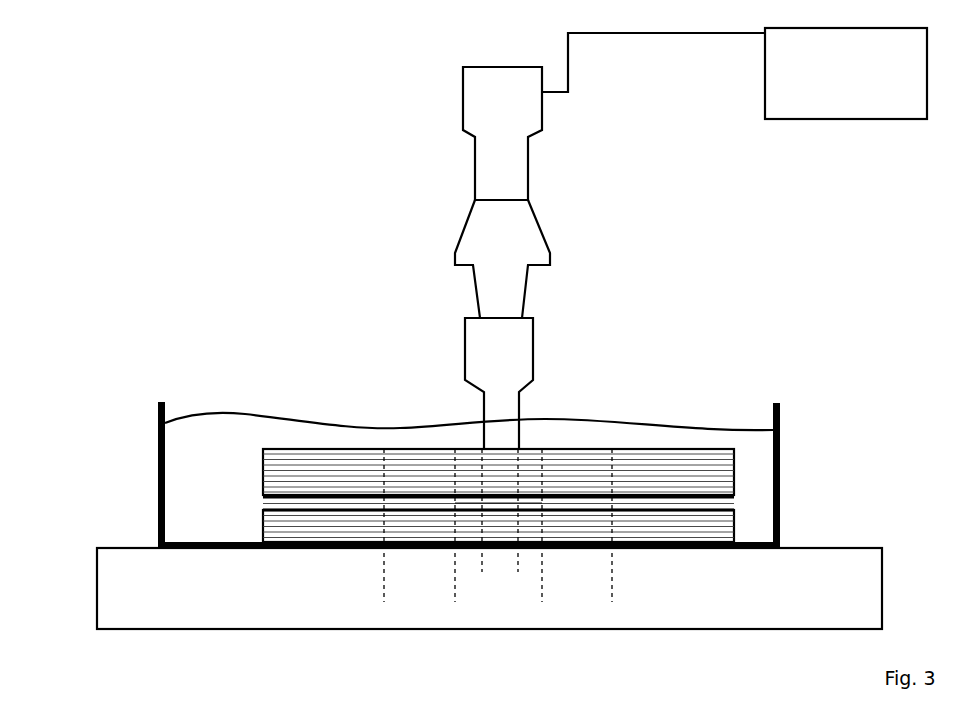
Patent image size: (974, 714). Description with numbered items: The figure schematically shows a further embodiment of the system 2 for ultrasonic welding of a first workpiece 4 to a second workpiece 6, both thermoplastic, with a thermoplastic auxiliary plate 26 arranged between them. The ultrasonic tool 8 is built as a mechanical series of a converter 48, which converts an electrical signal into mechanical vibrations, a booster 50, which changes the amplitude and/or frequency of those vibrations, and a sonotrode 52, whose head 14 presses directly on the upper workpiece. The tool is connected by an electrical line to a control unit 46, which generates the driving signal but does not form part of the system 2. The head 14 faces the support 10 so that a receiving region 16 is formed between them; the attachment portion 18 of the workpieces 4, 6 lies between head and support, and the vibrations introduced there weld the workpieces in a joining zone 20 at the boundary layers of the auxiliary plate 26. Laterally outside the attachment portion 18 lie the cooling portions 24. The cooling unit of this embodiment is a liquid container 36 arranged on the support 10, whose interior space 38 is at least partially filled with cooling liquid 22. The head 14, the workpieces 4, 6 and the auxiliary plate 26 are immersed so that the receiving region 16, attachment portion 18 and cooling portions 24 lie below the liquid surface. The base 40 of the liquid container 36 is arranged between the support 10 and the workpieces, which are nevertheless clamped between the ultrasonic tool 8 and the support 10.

The system 2 is at (248, 203).
The first workpiece 4 is at (260, 468).
The second workpiece 6 is at (260, 529).
The ultrasonic tool 8 is at (572, 217).
The support 10 is at (837, 598).
The head 14 is at (523, 445).
The receiving region 16 is at (482, 563).
The attachment portion 18 is at (455, 600).
The joining zone 20 is at (505, 500).
The cooling liquid 22 is at (508, 475).
The cooling portion 24 is at (455, 572).
The auxiliary plate 26 is at (260, 498).
The liquid container 36 is at (531, 361).
The interior space 38 is at (750, 405).
The base 40 is at (755, 535).
The control unit 46 is at (846, 73).
The converter 48 is at (462, 100).
The booster 50 is at (455, 233).
The sonotrode 52 is at (460, 325).